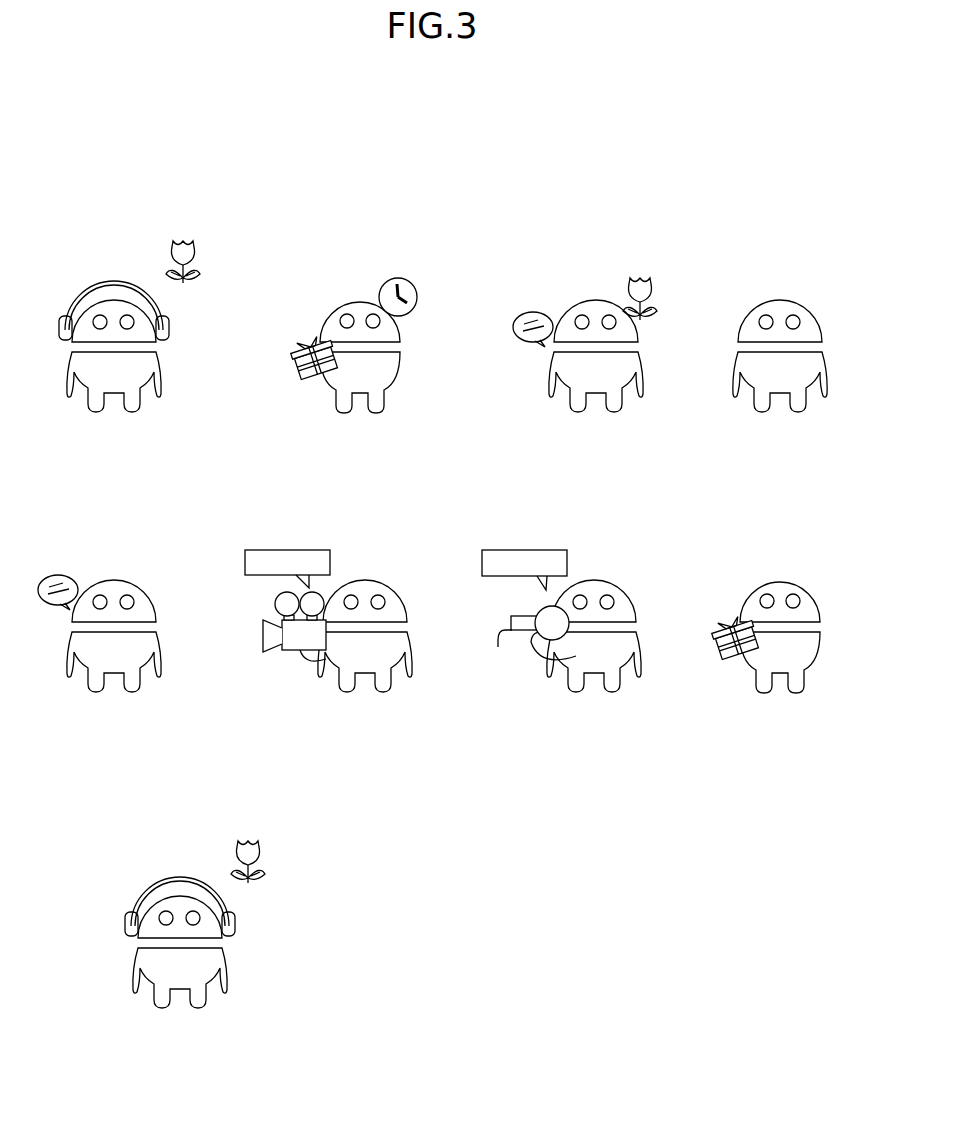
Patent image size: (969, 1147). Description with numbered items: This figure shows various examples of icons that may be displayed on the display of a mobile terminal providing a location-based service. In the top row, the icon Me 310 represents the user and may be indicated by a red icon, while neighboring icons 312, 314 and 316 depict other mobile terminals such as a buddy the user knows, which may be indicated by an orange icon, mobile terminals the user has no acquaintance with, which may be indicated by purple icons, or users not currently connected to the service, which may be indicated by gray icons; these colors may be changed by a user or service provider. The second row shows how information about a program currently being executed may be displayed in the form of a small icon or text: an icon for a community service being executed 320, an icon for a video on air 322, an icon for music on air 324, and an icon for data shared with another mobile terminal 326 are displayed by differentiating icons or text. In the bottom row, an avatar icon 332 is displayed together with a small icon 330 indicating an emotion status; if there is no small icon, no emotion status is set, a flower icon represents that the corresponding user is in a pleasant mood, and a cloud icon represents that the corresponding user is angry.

The Me 310 is at (109, 277).
The avatar Gilbert with clock and gift item 312 is at (349, 277).
The avatar James with speech bubble and flower item 314 is at (576, 277).
The basic avatar 316 is at (773, 277).
The community service being executed 320 is at (110, 568).
The video on air 322 is at (365, 570).
The music on air 324 is at (598, 570).
The data shared with another mobile terminal 326 is at (782, 570).
The small icon indicating an emotion status 330 is at (267, 845).
The avatar wearing headphones 332 is at (160, 1013).